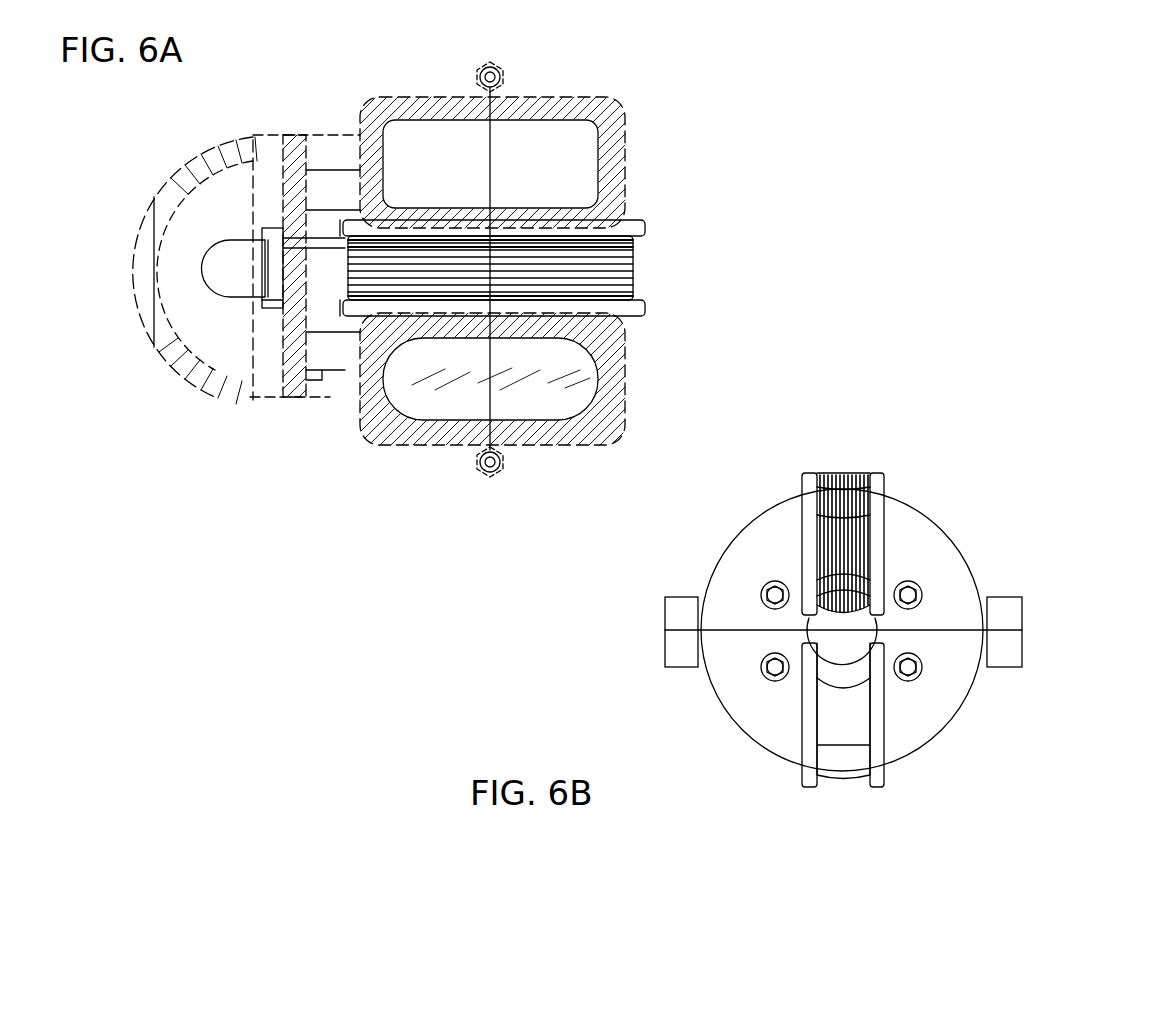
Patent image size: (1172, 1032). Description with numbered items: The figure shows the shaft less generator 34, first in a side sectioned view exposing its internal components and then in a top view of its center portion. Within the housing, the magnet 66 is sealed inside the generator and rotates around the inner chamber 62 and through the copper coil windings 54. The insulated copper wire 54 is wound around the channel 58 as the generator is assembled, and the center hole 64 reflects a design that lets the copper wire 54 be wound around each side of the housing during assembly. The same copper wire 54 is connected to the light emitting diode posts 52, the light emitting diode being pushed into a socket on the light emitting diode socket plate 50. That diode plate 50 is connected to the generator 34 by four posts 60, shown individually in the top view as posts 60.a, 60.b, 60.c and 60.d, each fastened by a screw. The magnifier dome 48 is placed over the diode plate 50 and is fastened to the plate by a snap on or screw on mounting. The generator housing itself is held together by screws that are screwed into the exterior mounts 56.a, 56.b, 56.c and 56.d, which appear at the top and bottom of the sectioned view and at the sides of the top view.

In FIG. 6A, the generator 34 is at (668, 94).
In FIG. 6B, the generator 34 is at (972, 462).
In FIG. 6A, the magnifier dome 48 is at (146, 212).
In FIG. 6A, the light emitting diode socket plate 50 is at (273, 140).
In FIG. 6A, the light emitting diode posts 52 is at (222, 305).
In FIG. 6A, the copper coil windings 54 is at (633, 250).
In FIG. 6B, the copper coil windings 54 is at (850, 472).
In FIG. 6A, the exterior mount 56.a is at (482, 60).
In FIG. 6B, the exterior mount 56.a is at (668, 666).
In FIG. 6A, the exterior mount 56.b is at (498, 476).
In FIG. 6B, the exterior mount 56.b is at (1020, 668).
In FIG. 6B, the exterior mount 56.c is at (665, 598).
In FIG. 6B, the exterior mount 56.d is at (1015, 597).
In FIG. 6B, the channel 58 is at (843, 730).
In FIG. 6A, the posts 60 is at (333, 135).
In FIG. 6B, the post 60.a is at (765, 676).
In FIG. 6B, the post 60.b is at (918, 676).
In FIG. 6B, the post 60.c is at (763, 588).
In FIG. 6B, the post 60.d is at (920, 586).
In FIG. 6A, the inner chamber 62 is at (540, 130).
In FIG. 6B, the center hole 64 is at (842, 645).
In FIG. 6A, the magnet 66 is at (598, 340).